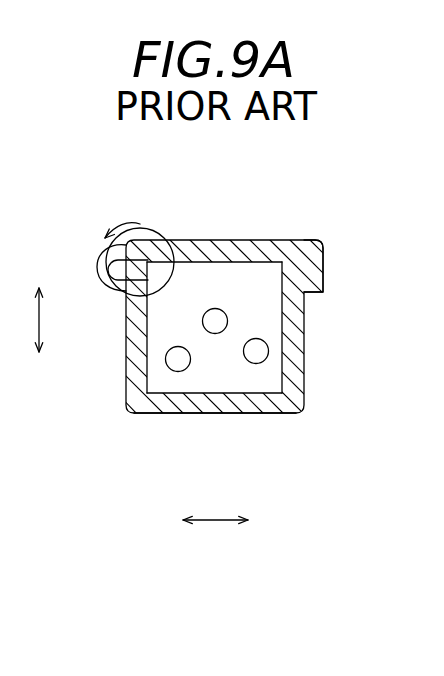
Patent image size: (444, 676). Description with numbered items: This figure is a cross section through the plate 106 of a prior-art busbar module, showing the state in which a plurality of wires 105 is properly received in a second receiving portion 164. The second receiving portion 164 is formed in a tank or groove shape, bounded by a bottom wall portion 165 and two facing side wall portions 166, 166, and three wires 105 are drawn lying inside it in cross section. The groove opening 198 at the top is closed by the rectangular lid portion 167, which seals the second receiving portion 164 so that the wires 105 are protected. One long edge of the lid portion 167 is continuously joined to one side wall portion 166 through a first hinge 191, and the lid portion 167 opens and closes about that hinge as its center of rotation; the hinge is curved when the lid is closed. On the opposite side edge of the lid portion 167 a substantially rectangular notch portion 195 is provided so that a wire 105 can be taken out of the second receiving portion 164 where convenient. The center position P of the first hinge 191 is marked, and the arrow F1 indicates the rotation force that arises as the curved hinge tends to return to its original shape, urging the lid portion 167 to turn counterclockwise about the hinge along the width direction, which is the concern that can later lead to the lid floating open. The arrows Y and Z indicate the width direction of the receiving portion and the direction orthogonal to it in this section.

The wires 105 is at (257, 351).
The plate 106 is at (305, 412).
The second receiving portion 164 is at (192, 415).
The bottom wall portion 165 is at (220, 413).
The side wall portions 166 is at (127, 347).
The lid portion 167 is at (287, 258).
The first hinge 191 is at (97, 270).
The notch portion 195 is at (320, 242).
The groove opening 198 is at (283, 267).
The center position of the first hinge P is at (96, 285).
The rotation force F1 is at (135, 222).
The Z direction Z is at (42, 318).
The width direction Y is at (213, 520).